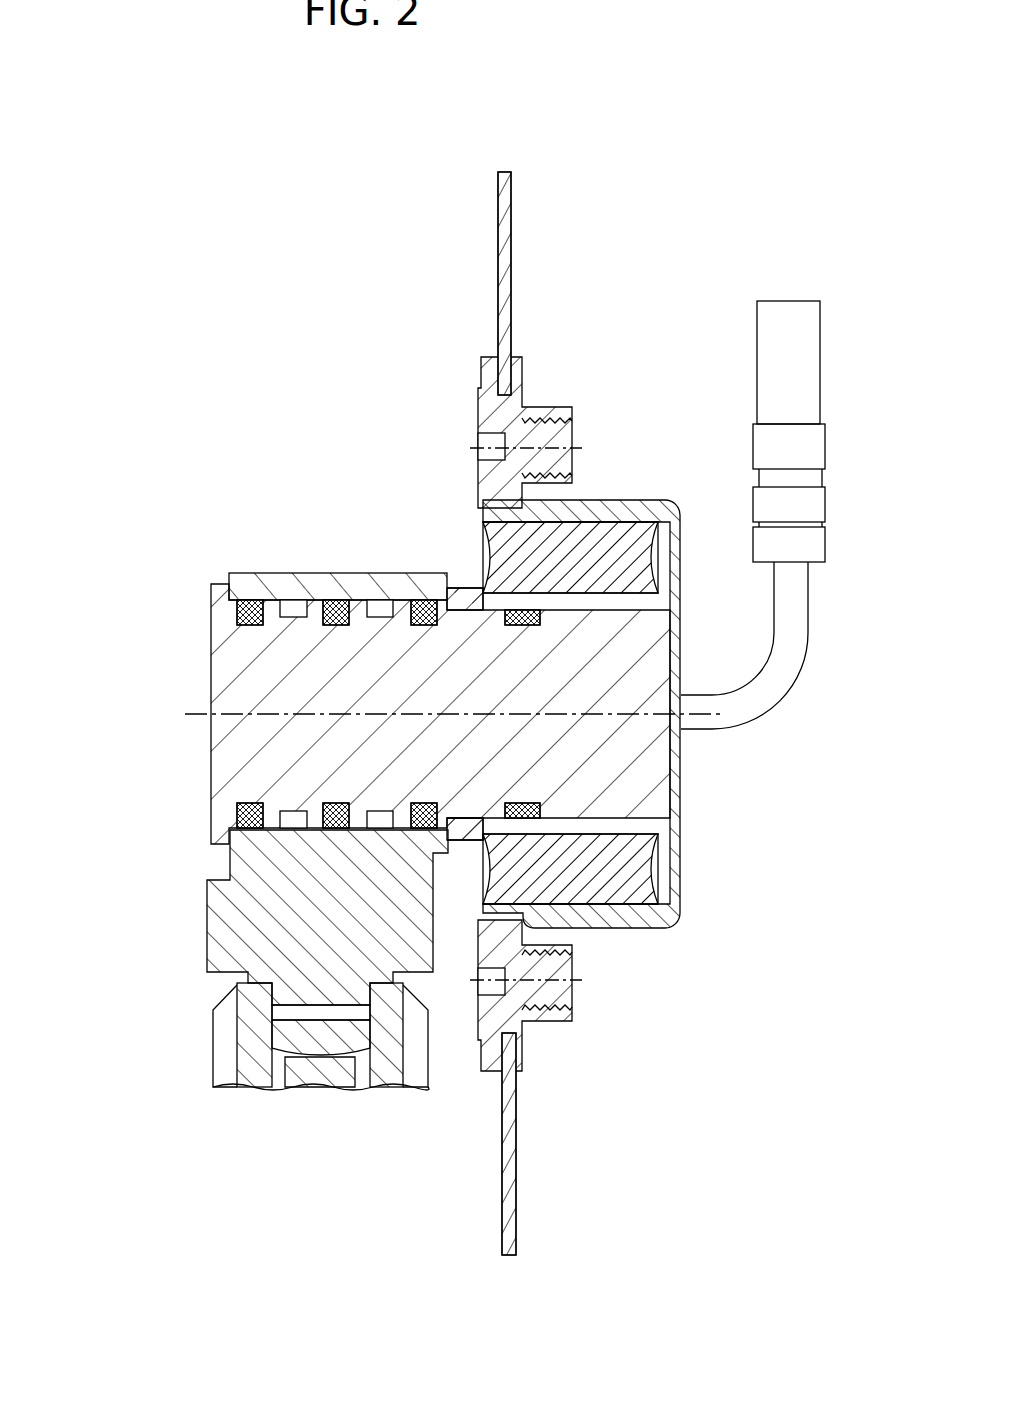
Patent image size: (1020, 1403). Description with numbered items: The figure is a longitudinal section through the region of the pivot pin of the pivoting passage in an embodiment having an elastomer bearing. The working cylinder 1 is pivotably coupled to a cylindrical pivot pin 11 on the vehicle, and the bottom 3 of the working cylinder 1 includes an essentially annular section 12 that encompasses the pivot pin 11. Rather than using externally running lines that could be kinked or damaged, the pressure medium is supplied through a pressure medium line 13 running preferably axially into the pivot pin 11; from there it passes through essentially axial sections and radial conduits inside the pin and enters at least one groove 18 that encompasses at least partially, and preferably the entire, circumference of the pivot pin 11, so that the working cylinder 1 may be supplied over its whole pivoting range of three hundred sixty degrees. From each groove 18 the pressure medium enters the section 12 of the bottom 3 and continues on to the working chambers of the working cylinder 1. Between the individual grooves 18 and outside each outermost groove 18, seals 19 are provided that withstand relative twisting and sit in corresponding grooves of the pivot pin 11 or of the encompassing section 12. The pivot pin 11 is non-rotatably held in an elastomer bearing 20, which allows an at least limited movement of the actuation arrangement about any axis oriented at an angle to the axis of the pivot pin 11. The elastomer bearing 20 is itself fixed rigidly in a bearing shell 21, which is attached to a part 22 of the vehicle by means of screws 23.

The working cylinder 1 is at (198, 1100).
The bottom 3 is at (305, 878).
The pivot pin 11 is at (608, 775).
The section 12 is at (240, 583).
The pressure medium line 13 is at (778, 678).
The groove 18 is at (290, 608).
The seal 19 is at (333, 600).
The elastomer bearing 20 is at (603, 877).
The bearing shell 21 is at (638, 503).
The vehicle part 22 is at (505, 248).
The screw 23 is at (540, 437).